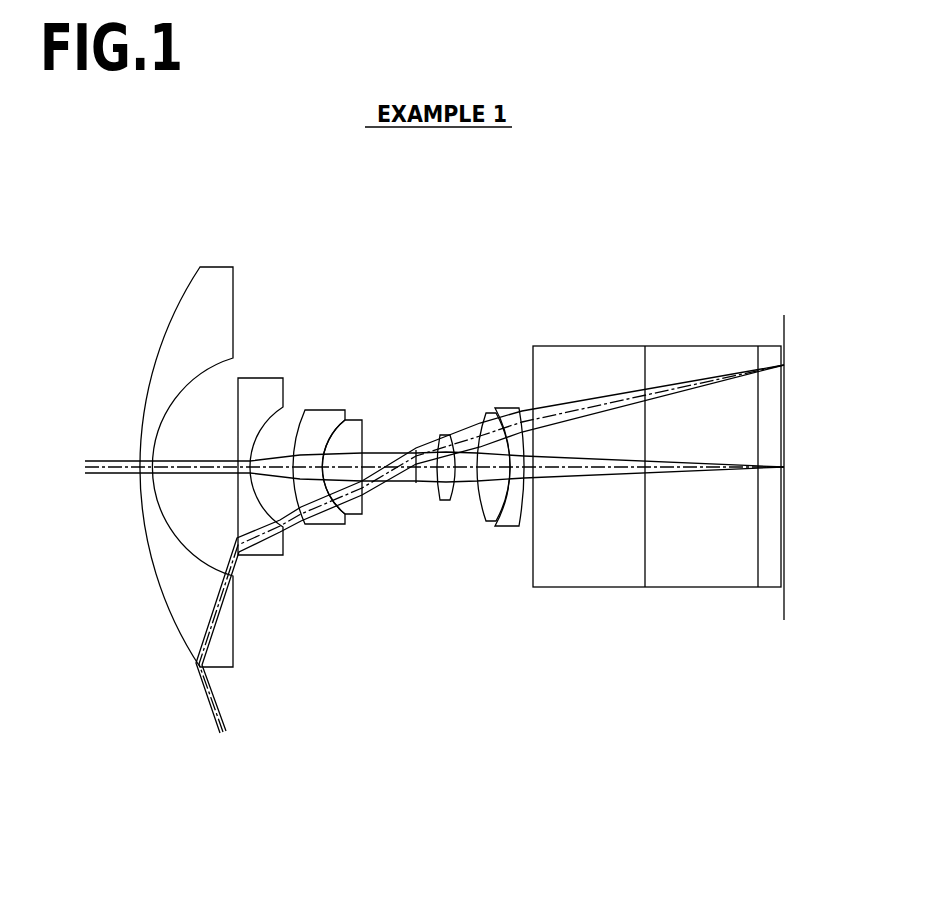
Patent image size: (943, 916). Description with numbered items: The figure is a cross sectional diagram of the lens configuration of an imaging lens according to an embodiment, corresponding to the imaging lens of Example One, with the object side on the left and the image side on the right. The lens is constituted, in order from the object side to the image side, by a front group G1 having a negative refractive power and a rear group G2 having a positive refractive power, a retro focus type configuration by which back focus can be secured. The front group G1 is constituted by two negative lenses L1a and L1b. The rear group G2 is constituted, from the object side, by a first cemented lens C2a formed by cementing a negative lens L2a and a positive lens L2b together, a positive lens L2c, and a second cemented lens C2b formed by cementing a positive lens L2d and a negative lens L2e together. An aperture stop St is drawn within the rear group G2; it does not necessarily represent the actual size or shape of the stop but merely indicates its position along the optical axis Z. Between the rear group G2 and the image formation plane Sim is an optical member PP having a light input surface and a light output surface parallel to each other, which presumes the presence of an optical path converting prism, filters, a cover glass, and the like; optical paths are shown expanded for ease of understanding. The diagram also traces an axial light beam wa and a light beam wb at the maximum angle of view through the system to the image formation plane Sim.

The optical axis Z is at (104, 462).
The axial light beam wa is at (82, 440).
The light beam at a maximum angle of view wb is at (200, 733).
The front group G1 is at (153, 186).
The negative lens L1a is at (213, 268).
The negative lens L1b is at (265, 382).
The rear group G2 is at (258, 186).
The first cemented lens C2a is at (258, 226).
The negative lens L2a is at (325, 412).
The positive lens L2b is at (355, 419).
The aperture stop St is at (416, 450).
The positive lens L2c is at (440, 433).
The second cemented lens C2b is at (575, 226).
The positive lens L2d is at (488, 413).
The negative lens L2e is at (505, 408).
The optical member PP is at (533, 327).
The image formation plane Sim is at (786, 601).